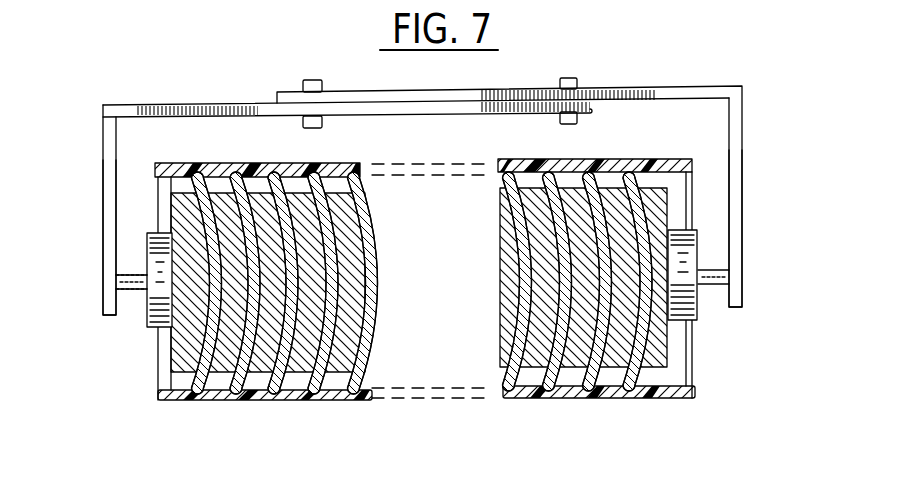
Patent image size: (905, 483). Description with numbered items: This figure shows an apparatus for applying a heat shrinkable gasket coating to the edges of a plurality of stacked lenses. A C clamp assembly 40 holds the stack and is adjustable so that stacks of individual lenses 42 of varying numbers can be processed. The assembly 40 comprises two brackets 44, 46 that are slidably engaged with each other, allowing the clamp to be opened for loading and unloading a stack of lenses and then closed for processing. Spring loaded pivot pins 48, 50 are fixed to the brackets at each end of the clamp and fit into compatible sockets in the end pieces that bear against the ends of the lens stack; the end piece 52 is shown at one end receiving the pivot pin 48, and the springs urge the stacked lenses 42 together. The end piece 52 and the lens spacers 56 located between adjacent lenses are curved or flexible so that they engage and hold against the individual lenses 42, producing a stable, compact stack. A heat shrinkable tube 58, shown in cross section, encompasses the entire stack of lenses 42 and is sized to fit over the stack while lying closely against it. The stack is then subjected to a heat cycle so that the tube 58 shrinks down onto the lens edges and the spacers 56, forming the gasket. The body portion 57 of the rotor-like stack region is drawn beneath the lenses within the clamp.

The C clamp assembly 40 is at (750, 150).
The individual lenses 42 is at (372, 260).
The bracket 44 is at (743, 178).
The bracket 46 is at (105, 193).
The spring loaded pivot pin 48 is at (713, 268).
The spring loaded pivot pin 50 is at (133, 275).
The end piece 52 is at (660, 352).
The lens spacers 56 is at (213, 400).
The left rotor body 57 is at (185, 345).
The heat shrinkable tube 58 is at (670, 397).